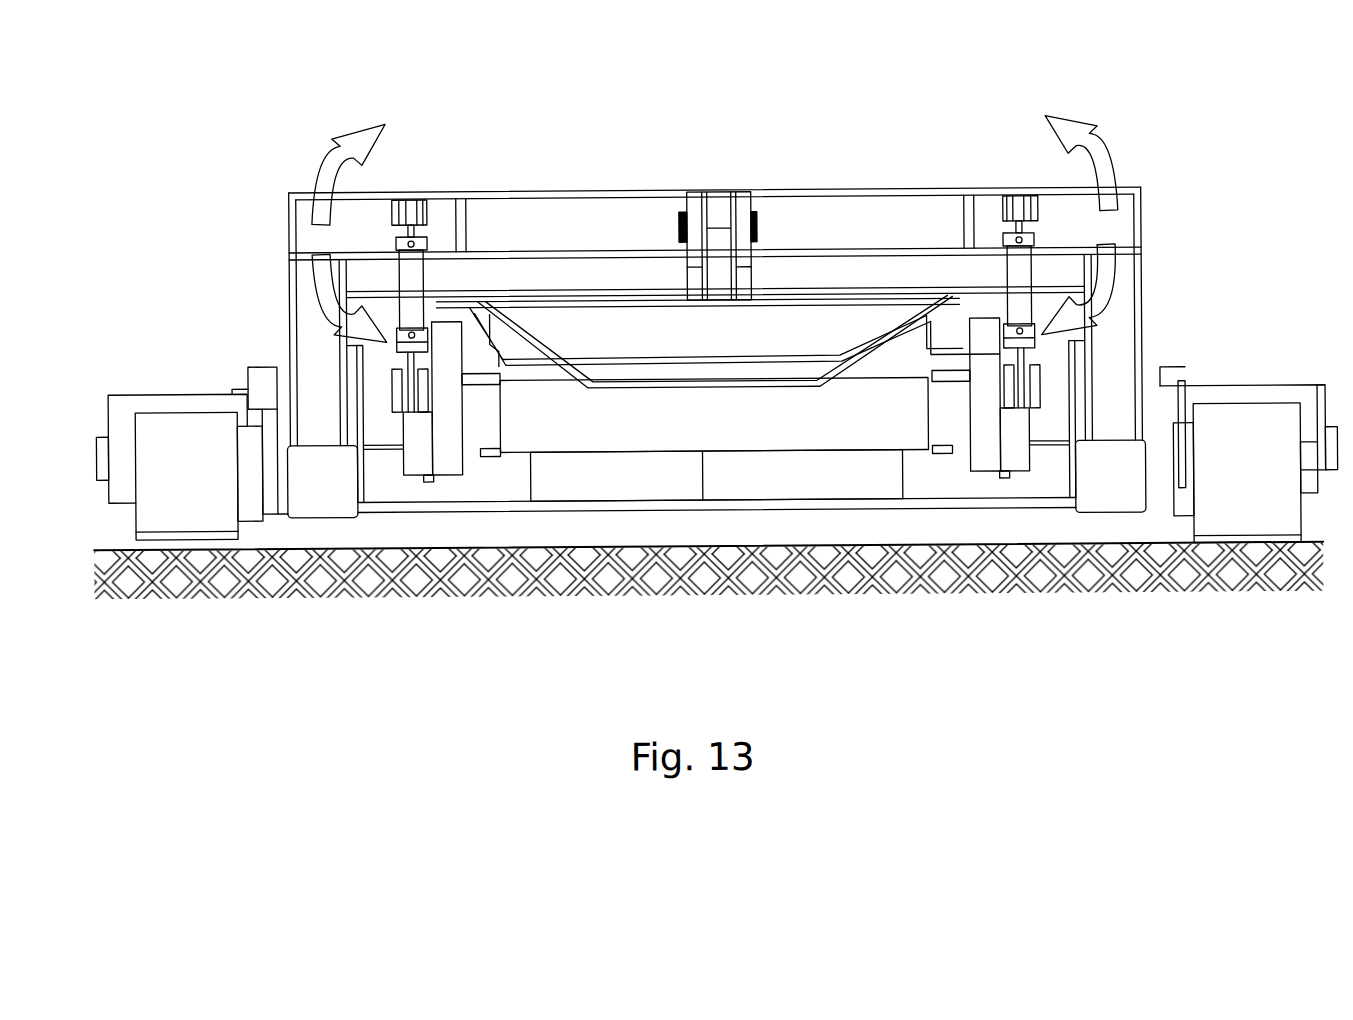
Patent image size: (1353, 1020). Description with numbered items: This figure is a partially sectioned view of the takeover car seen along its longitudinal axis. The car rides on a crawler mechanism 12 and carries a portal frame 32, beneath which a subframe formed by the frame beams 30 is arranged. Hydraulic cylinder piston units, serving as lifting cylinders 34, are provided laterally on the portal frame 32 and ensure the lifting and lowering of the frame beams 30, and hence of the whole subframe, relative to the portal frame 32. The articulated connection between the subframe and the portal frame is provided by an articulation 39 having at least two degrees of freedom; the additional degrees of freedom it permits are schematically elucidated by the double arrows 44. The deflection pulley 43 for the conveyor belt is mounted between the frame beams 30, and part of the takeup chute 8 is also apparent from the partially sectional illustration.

The takeup chute 8 is at (710, 338).
The crawler mechanism 12 is at (200, 480).
The frame beams 30 is at (988, 632).
The portal frame 32 is at (547, 188).
The hydraulic cylinder piston units 34 is at (1023, 248).
The articulation 39 is at (723, 215).
The deflection pulley 43 is at (642, 413).
The double arrows 44 is at (1102, 269).